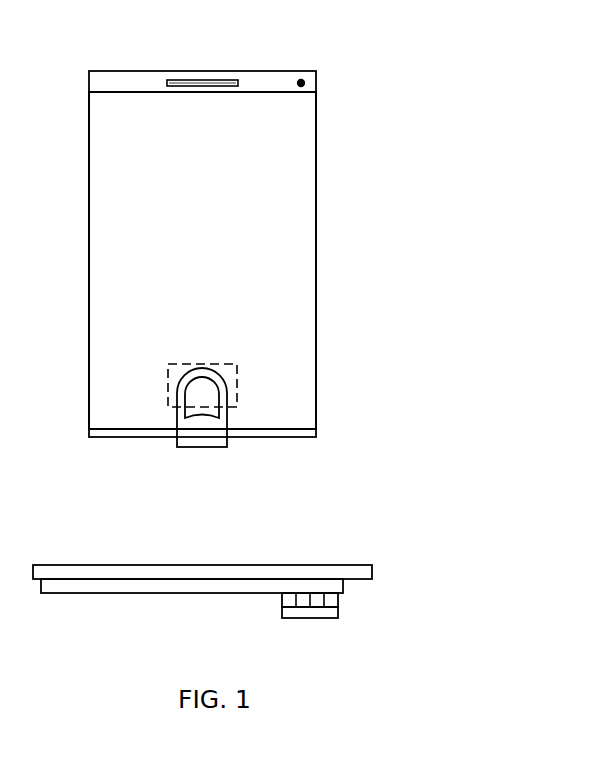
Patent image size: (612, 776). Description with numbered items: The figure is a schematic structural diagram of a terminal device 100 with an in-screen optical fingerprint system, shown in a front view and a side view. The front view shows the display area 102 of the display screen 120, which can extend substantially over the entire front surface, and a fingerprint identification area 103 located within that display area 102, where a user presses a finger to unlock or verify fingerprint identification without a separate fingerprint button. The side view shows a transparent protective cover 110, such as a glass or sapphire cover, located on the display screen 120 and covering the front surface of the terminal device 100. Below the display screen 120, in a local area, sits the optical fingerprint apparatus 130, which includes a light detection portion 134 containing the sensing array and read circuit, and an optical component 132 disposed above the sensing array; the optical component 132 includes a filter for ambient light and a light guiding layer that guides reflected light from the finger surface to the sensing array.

The terminal device 100 is at (130, 48).
The transparent protective cover 110 is at (272, 83).
The display area 102 is at (298, 363).
The fingerprint identification area 103 is at (235, 385).
The display screen 120 is at (212, 595).
The optical fingerprint apparatus 130 is at (374, 615).
The optical component 132 is at (338, 600).
The light detection portion 134 is at (338, 611).